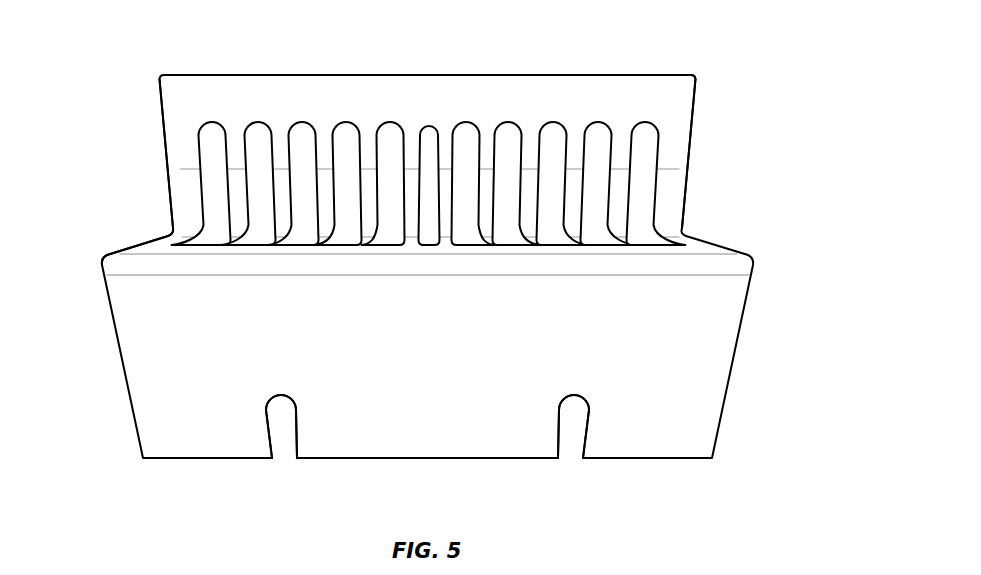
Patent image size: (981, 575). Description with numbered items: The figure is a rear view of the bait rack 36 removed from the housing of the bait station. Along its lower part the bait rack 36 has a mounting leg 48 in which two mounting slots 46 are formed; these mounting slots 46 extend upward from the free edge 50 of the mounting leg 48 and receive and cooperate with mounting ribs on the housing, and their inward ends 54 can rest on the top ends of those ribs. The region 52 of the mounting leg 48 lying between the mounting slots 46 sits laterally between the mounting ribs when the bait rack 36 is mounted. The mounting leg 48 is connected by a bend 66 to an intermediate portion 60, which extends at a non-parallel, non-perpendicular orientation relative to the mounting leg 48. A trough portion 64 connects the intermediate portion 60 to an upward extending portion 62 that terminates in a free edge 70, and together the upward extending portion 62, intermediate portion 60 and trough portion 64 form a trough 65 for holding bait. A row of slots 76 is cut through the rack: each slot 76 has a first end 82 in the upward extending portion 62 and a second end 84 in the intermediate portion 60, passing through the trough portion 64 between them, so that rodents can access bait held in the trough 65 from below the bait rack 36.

The bait rack 36 is at (698, 327).
The mounting slots 46 is at (289, 470).
The mounting leg 48 is at (507, 438).
The free edge 50 is at (348, 458).
The region 52 is at (528, 430).
The inward ends 54 is at (273, 400).
The intermediate portion 60 is at (143, 250).
The upward extending portion 62 is at (562, 88).
The trough portion 64 is at (178, 223).
The trough 65 is at (137, 146).
The bend 66 is at (122, 264).
The free edge 70 is at (482, 75).
The slots 76 is at (389, 104).
The first end 82 is at (369, 113).
The second end 84 is at (388, 260).